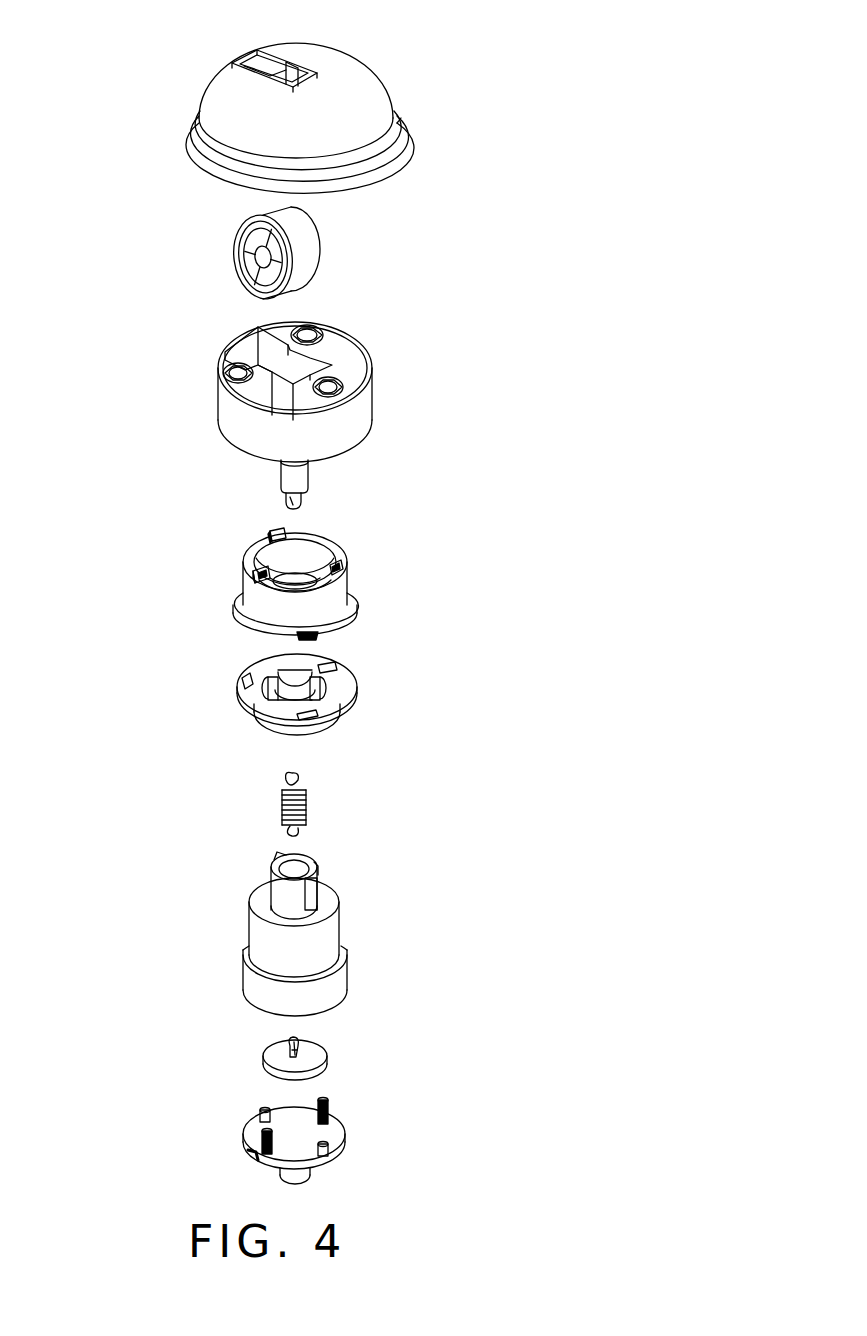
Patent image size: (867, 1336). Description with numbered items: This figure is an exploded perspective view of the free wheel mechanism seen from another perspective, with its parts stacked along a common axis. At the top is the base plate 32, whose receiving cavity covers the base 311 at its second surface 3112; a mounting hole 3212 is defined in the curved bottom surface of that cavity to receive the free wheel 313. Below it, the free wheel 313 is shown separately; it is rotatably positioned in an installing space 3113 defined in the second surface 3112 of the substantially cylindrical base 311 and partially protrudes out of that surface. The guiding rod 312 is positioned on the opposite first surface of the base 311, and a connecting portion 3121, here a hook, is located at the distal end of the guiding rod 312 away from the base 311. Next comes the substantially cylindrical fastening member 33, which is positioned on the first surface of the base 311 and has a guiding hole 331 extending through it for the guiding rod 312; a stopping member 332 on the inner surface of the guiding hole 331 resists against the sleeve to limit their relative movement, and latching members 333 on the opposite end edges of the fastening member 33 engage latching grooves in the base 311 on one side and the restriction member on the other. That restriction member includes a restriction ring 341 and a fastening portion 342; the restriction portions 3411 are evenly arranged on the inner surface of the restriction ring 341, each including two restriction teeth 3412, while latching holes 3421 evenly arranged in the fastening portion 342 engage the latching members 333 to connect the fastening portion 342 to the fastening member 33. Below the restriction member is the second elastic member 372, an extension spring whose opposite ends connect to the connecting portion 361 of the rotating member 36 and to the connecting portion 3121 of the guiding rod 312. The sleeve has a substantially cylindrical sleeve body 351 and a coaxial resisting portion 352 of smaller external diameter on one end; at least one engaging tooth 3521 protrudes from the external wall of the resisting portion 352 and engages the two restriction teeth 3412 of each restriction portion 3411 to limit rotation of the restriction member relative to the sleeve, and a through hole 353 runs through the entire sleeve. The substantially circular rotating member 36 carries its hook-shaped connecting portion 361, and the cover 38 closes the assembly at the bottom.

The base plate 32 is at (380, 137).
The mounting hole 3212 is at (290, 63).
The free wheel 313 is at (305, 245).
The base 311 is at (362, 410).
The second surface 3112 is at (358, 348).
The installing space 3113 is at (247, 348).
The guiding rod 312 is at (300, 480).
The connecting portion 3121 is at (300, 500).
The fastening member 33 is at (335, 602).
The guiding hole 331 is at (298, 573).
The stopping member 332 is at (262, 540).
The latching members 333 is at (262, 547).
The restriction ring 341 is at (277, 728).
The fastening portion 342 is at (345, 695).
The restriction portions 3411 is at (128, 648).
The restriction teeth 3412 is at (272, 682).
The latching holes 3421 is at (335, 670).
The second elastic member 372 is at (307, 795).
The sleeve body 351 is at (273, 955).
The resisting portion 352 is at (283, 888).
The through hole 353 is at (302, 868).
The engaging tooth 3521 is at (312, 897).
The rotating member 36 is at (312, 1060).
The connecting portion 361 is at (292, 1045).
The cover 38 is at (332, 1138).